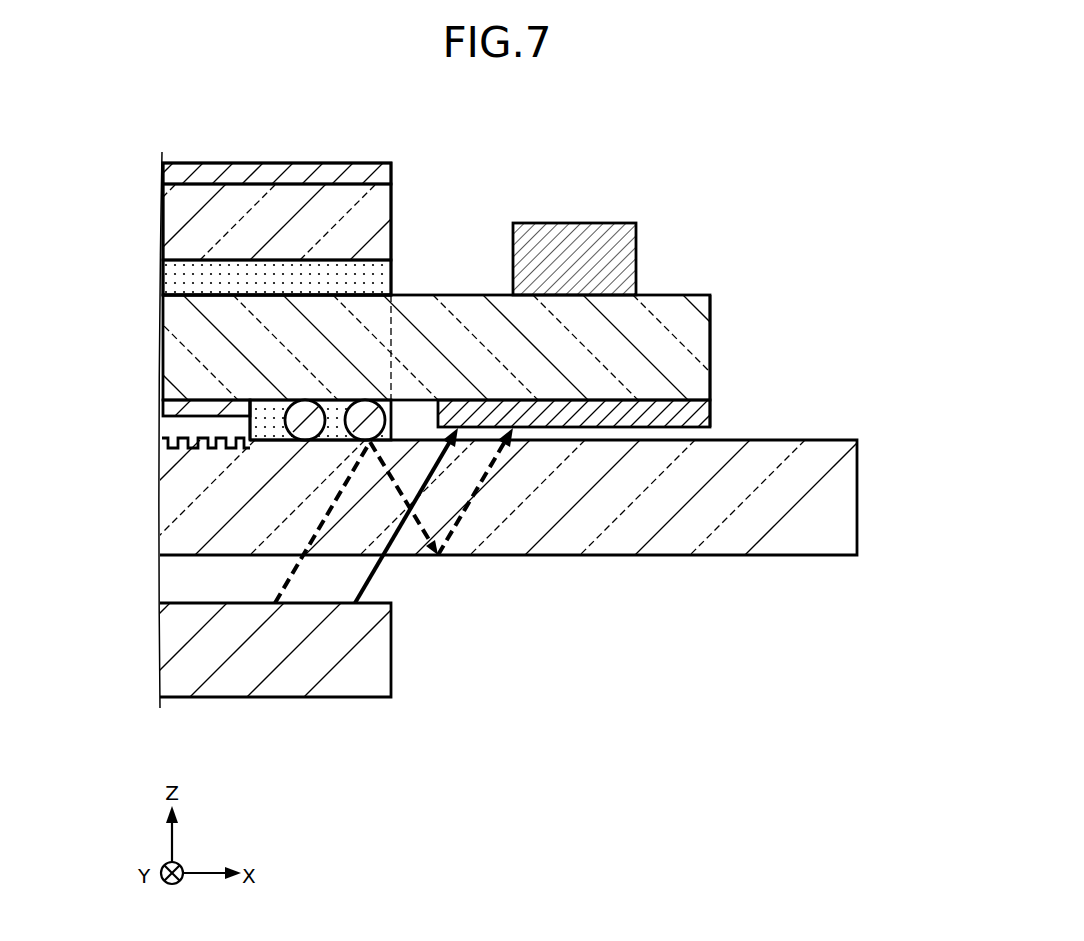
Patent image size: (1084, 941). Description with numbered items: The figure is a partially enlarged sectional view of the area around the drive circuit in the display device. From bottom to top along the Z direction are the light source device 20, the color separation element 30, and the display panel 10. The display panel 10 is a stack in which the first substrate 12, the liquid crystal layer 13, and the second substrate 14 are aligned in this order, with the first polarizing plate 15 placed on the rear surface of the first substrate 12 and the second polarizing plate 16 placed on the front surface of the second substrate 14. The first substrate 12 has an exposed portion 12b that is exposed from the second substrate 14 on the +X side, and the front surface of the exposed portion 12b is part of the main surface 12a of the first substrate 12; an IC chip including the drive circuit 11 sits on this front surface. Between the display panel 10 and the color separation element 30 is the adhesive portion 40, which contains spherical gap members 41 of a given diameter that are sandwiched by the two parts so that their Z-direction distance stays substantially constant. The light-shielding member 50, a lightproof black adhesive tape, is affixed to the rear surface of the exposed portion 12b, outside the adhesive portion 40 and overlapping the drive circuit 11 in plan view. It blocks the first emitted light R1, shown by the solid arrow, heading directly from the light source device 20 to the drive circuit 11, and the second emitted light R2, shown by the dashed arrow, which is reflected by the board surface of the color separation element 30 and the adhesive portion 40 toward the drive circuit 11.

The display panel 10 is at (277, 192).
The second polarizing plate 16 is at (307, 176).
The second substrate 14 is at (281, 222).
The liquid crystal layer 13 is at (312, 272).
The drive circuit 11 is at (574, 227).
The first substrate 12 is at (435, 347).
The main surface 12a is at (232, 287).
The exposed portion 12b is at (592, 361).
The first polarizing plate 15 is at (167, 424).
The adhesive portion 40 is at (238, 402).
The gap member 41 is at (235, 455).
The light-shielding member 50 is at (593, 414).
The color separation element 30 is at (506, 497).
The light source device 20 is at (237, 689).
The first emitted light R1 is at (422, 529).
The second emitted light R2 is at (428, 529).